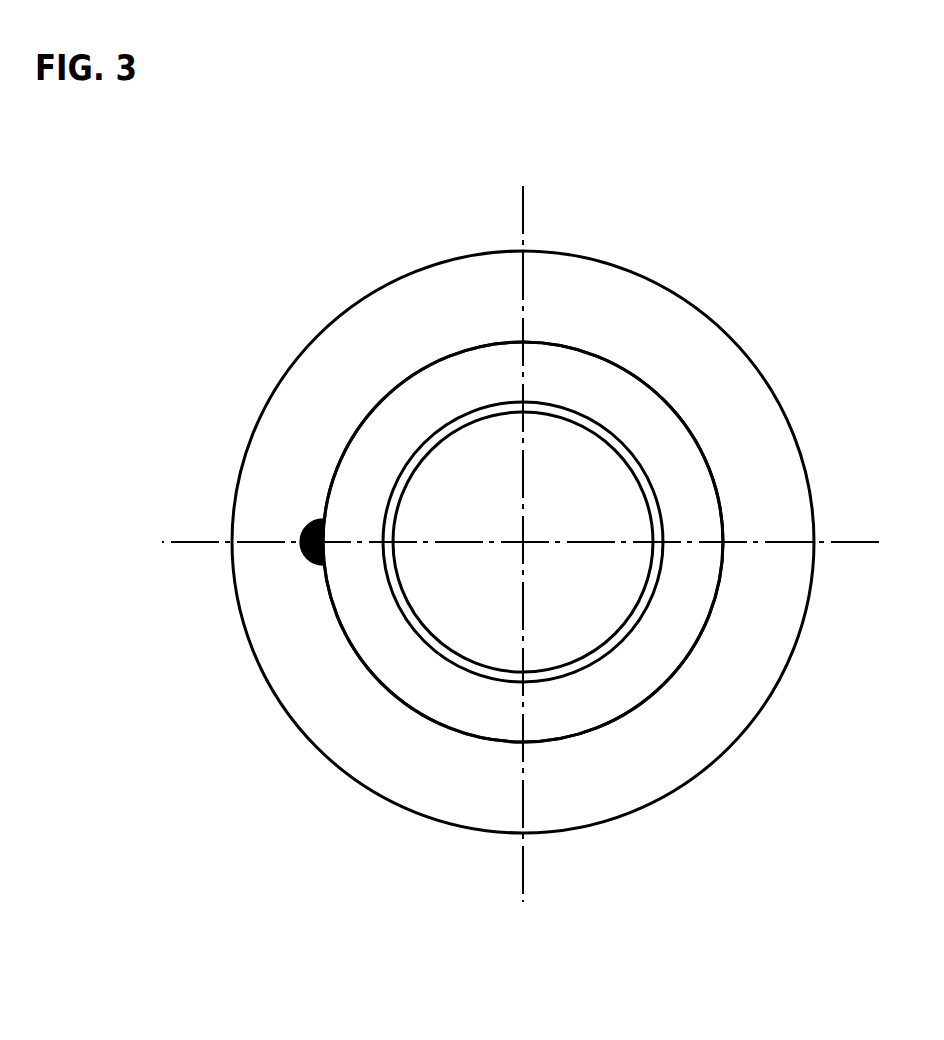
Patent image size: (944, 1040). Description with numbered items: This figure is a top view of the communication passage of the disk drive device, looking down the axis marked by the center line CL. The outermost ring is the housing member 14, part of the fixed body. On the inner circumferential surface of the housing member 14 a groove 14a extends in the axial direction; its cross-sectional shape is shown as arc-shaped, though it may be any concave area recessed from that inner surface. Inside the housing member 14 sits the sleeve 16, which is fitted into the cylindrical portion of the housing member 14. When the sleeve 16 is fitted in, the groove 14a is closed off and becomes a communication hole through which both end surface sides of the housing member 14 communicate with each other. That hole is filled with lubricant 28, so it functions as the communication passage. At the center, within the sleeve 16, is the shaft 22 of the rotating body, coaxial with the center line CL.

The housing member 14 is at (295, 683).
The groove 14a is at (293, 560).
The sleeve 16 is at (447, 700).
The shaft 22 is at (572, 458).
The lubricant 28 is at (300, 550).
The center line CL is at (524, 544).